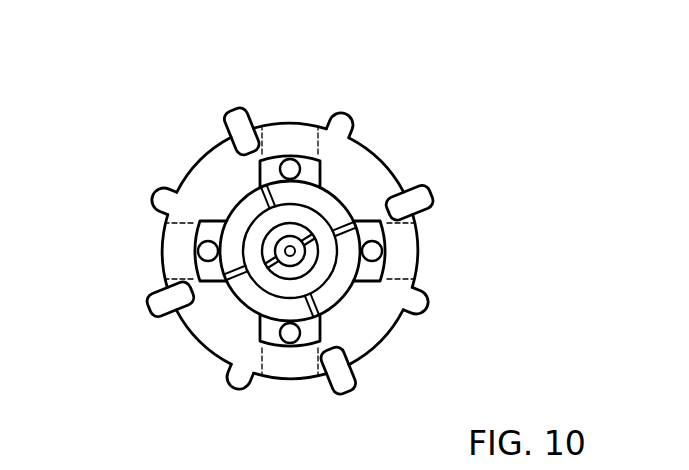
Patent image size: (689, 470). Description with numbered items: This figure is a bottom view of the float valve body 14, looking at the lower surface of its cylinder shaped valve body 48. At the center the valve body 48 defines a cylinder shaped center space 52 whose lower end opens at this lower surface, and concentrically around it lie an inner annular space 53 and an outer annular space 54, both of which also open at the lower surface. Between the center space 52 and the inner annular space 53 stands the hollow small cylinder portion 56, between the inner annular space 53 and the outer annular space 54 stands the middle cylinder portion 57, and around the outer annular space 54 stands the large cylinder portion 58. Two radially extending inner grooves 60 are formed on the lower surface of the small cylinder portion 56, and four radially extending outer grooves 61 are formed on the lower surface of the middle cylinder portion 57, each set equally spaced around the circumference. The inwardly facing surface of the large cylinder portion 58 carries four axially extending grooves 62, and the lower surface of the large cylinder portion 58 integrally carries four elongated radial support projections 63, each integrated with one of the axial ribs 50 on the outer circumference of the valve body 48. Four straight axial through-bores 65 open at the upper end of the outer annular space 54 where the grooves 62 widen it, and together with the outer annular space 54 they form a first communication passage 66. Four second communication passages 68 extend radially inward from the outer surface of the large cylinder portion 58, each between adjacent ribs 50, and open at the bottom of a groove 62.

The float valve body 14 is at (405, 122).
The valve body 48 is at (382, 322).
The ribs 50 is at (158, 193).
The center space 52 is at (288, 258).
The inner annular space 53 is at (260, 225).
The outer annular space 54 is at (342, 200).
The small cylinder portion 56 is at (305, 262).
The middle cylinder portion 57 is at (262, 283).
The large cylinder portion 58 is at (352, 163).
The inner grooves 60 is at (308, 235).
The outer grooves 61 is at (362, 222).
The grooves 62 is at (196, 223).
The support projections 63 is at (413, 202).
The through-bores 65 is at (290, 333).
The first communication passage 66 is at (287, 172).
The second communication passages 68 is at (172, 265).